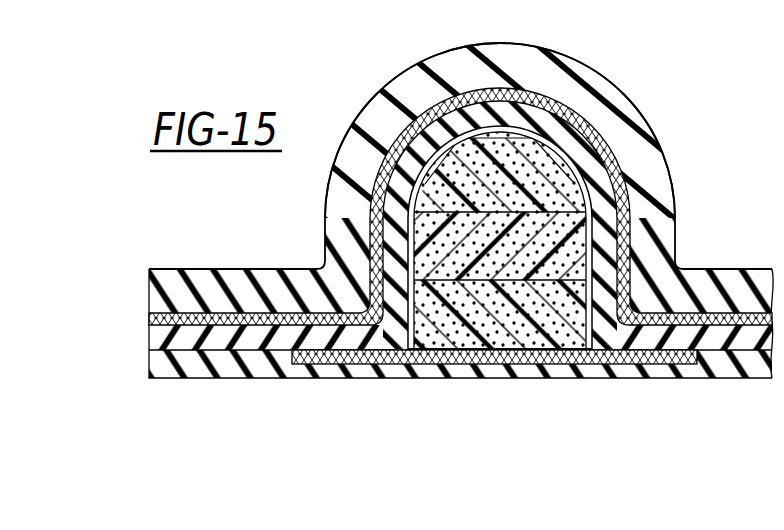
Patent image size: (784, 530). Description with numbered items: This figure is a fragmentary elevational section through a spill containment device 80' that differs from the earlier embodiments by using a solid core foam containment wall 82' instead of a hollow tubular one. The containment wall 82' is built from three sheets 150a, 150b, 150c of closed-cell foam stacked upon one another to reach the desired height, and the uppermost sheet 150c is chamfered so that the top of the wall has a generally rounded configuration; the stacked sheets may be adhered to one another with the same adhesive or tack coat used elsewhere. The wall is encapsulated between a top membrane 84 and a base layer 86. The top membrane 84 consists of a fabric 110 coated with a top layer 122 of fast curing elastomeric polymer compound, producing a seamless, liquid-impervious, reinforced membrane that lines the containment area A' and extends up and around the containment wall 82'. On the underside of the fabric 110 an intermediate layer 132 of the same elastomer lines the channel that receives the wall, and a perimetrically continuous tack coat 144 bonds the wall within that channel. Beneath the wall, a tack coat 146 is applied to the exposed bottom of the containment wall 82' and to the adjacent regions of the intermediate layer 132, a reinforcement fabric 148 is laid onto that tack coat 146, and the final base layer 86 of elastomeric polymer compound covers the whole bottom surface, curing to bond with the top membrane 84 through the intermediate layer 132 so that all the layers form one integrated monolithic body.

The spill containment device 80' is at (461, 192).
The solid containment wall 82' is at (500, 176).
The top membrane 84 is at (658, 120).
The base layer 86 is at (164, 372).
The fabric 110 is at (603, 97).
The top layer 122 is at (591, 125).
The intermediate layer 132 is at (248, 344).
The tack coat 144 is at (373, 208).
The tack coat 146 is at (420, 368).
The reinforcement fabric 148 is at (330, 360).
The sheet 150a is at (573, 298).
The sheet 150b is at (573, 240).
The sheet 150c is at (573, 160).
The containment area A' is at (752, 218).